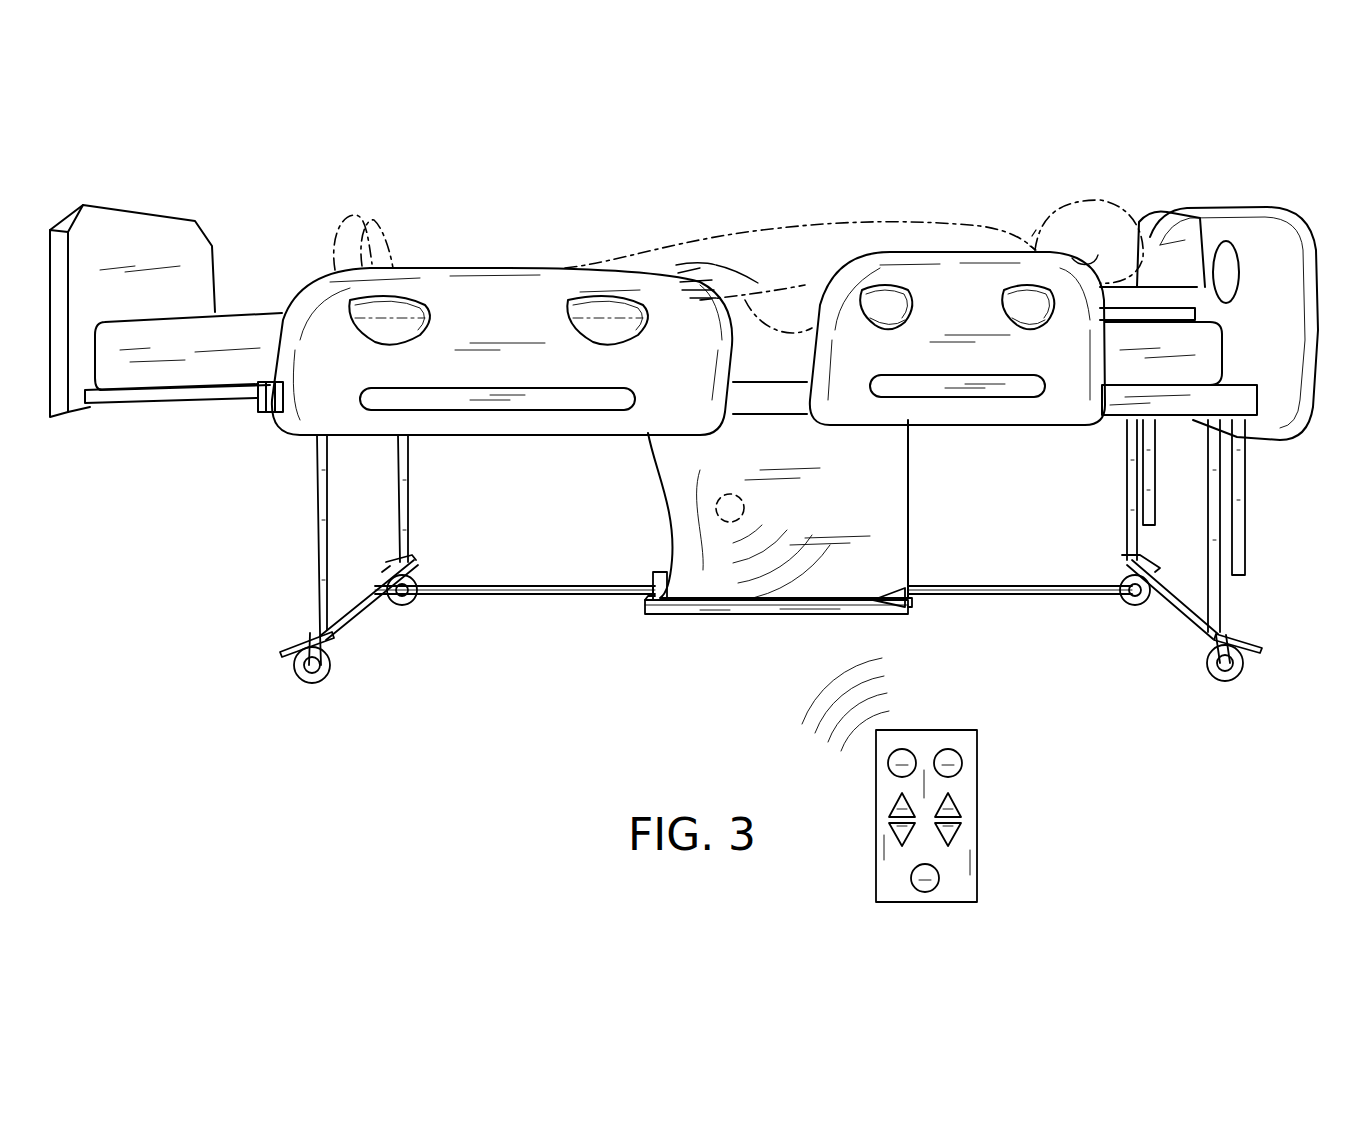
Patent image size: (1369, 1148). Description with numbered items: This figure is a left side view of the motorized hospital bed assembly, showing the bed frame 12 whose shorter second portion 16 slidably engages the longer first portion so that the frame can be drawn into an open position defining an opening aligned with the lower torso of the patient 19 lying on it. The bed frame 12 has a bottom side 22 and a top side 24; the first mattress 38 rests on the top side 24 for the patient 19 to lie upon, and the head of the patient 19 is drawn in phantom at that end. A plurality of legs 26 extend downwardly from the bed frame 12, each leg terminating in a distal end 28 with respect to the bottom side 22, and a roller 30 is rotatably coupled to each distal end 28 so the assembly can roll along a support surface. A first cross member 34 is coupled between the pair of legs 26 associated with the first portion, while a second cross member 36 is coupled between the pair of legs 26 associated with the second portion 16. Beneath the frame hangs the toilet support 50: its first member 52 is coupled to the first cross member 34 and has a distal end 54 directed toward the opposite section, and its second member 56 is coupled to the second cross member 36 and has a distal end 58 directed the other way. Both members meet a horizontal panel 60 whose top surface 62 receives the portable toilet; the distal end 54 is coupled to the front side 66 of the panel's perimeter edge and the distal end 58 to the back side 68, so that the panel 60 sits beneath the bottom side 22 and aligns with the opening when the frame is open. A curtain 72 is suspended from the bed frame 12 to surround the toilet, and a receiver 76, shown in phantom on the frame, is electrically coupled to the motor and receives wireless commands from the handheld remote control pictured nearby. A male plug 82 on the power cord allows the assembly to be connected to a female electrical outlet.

The bed frame 12 is at (1188, 418).
The second portion 16 is at (188, 403).
The patient 19 is at (1072, 223).
The bottom side 22 is at (1108, 420).
The top side 24 is at (1148, 385).
The legs 26 is at (407, 483).
The distal end 28 is at (340, 635).
The rollers 30 is at (312, 682).
The first cross member 34 is at (1182, 607).
The second cross member 36 is at (350, 603).
The first mattress 38 is at (1208, 300).
The toilet support 50 is at (683, 620).
The first member 52 is at (1022, 596).
The distal end 54 is at (883, 609).
The second member 56 is at (510, 595).
The distal end 58 is at (660, 616).
The panel 60 is at (757, 617).
The top surface 62 is at (660, 570).
The front side 66 is at (910, 606).
The back side 68 is at (640, 604).
The curtain 72 is at (912, 462).
The receiver 76 is at (730, 494).
The male plug 82 is at (977, 796).